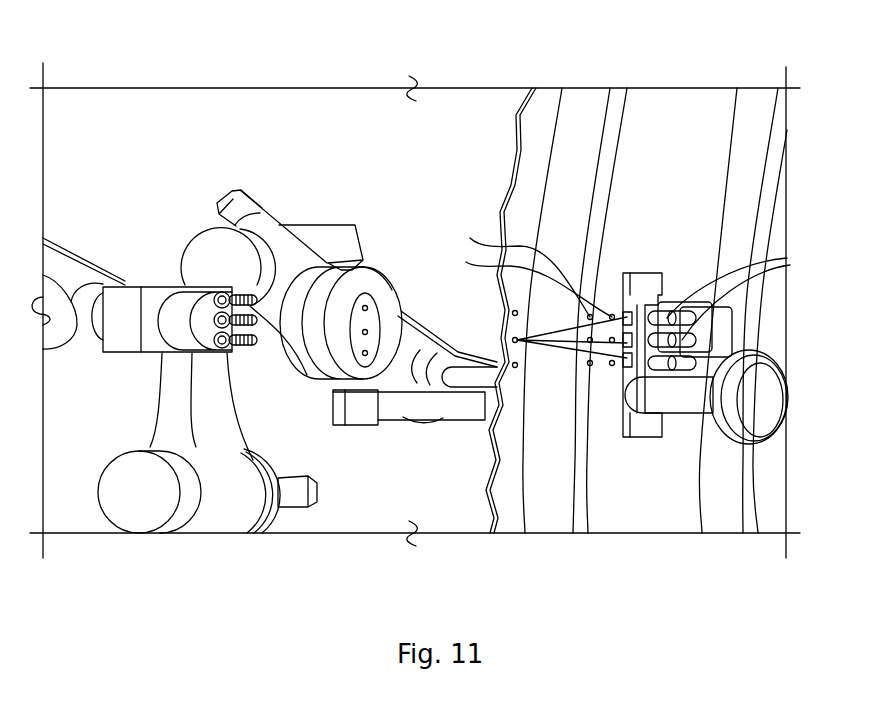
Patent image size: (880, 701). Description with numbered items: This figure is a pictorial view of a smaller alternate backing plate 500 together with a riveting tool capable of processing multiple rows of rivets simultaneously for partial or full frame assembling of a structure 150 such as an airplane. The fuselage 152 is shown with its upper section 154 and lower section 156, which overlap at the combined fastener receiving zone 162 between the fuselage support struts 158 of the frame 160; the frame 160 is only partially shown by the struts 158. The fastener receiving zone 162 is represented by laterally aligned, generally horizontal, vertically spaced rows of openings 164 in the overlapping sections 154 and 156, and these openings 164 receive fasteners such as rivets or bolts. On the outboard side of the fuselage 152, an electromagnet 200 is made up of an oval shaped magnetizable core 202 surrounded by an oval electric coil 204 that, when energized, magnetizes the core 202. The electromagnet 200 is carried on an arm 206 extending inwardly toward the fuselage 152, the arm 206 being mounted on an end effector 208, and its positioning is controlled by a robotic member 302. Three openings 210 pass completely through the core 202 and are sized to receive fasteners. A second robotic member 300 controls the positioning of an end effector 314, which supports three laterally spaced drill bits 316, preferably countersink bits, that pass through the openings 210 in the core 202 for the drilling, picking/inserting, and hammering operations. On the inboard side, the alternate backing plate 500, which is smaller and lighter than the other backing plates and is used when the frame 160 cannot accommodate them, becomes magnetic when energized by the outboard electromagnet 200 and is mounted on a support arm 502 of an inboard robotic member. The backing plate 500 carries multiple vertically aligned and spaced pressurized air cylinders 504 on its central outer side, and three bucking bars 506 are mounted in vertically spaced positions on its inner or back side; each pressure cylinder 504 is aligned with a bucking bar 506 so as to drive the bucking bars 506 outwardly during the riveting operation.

The structure 150 is at (697, 84).
The fuselage 152 is at (768, 527).
The upper section 154 is at (720, 88).
The lower section 156 is at (641, 527).
The fuselage support struts 158 is at (507, 527).
The frame 160 is at (585, 93).
The combined overlapping fastener receiving zone 162 is at (528, 281).
The openings 164 is at (520, 270).
The electromagnet 200 is at (320, 392).
The core 202 is at (378, 313).
The coil 204 is at (389, 289).
The arm 206 is at (395, 407).
The end effector 208 is at (421, 420).
The openings 210 is at (365, 300).
The robotic member 300 is at (129, 273).
The robotic member 302 is at (278, 210).
The end effector 314 is at (187, 297).
The drill bits 316 is at (242, 352).
The alternate backing plate 500 is at (633, 262).
The support arm 502 is at (782, 405).
The pressurized air cylinders 504 is at (787, 258).
The bucking bars 506 is at (501, 338).